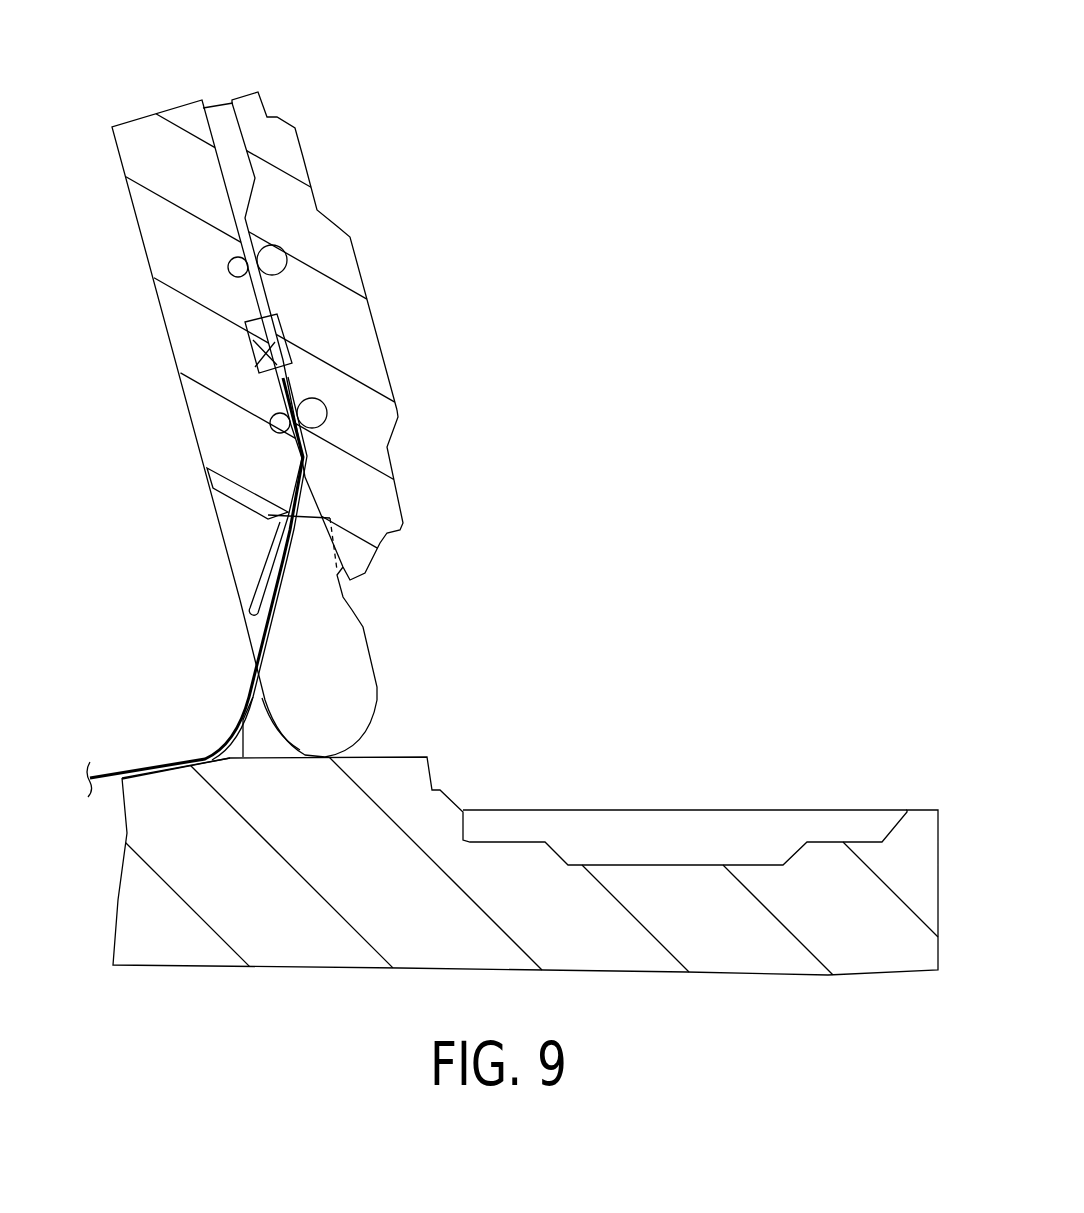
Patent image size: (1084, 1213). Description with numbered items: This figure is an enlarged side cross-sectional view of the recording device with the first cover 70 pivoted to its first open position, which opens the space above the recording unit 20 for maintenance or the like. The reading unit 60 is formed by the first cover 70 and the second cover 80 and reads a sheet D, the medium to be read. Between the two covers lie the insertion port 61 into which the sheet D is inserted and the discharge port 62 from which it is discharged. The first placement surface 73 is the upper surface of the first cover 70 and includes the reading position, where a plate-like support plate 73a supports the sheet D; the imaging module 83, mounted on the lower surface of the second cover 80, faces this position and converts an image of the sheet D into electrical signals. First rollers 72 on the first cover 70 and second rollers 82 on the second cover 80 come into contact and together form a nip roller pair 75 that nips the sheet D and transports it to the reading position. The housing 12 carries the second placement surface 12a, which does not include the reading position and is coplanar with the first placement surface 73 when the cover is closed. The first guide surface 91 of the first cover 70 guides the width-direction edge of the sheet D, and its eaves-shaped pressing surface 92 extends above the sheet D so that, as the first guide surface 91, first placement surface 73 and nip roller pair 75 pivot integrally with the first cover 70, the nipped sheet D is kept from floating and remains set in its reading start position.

The housing 12 is at (130, 907).
The second placement surface 12a is at (178, 761).
The recording unit 20 is at (644, 823).
The reading unit 60 is at (178, 321).
The insertion port 61 is at (310, 509).
The discharge port 62 is at (215, 88).
The first cover 70 is at (243, 92).
The first rollers 72 is at (287, 256).
The first placement surface 73 is at (333, 546).
The support plate 73a is at (284, 323).
The nip roller pair 75 is at (310, 280).
The second cover 80 is at (143, 119).
The second rollers 82 is at (228, 267).
The imaging module 83 is at (268, 348).
The first guide surface 91 is at (363, 667).
The pressing surface 92 is at (268, 549).
The sheet D is at (140, 766).